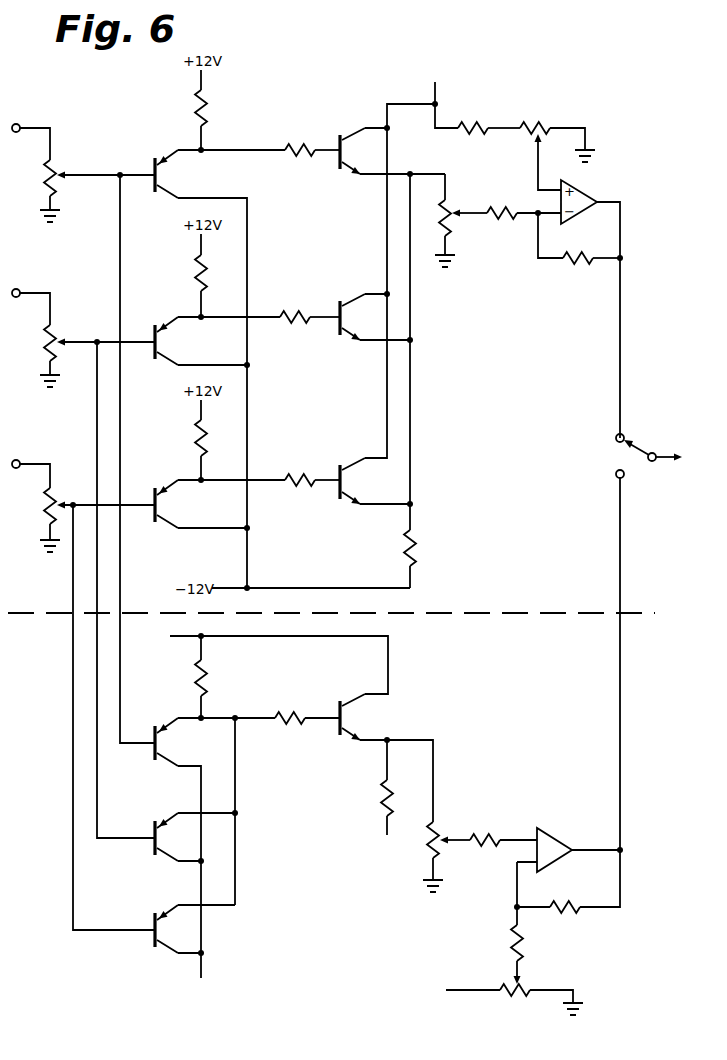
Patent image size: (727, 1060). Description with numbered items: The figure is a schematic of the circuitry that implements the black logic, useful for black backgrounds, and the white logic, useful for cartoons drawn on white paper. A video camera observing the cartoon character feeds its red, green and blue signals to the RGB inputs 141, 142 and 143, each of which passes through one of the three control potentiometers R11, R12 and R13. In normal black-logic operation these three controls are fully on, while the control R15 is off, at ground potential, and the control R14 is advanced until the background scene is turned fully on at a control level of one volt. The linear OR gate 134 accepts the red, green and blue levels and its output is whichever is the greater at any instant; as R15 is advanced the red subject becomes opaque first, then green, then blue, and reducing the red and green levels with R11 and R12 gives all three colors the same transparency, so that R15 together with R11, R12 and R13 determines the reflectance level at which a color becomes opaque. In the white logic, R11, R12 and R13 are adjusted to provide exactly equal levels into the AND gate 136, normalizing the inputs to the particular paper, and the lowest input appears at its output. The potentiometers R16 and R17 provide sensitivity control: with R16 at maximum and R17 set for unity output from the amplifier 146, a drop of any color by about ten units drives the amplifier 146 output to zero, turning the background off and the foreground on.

The RGB input 141 is at (19, 123).
The RGB input 142 is at (19, 290).
The RGB input 143 is at (19, 461).
The linear OR gate 134 is at (338, 257).
The AND gate 136 is at (315, 830).
The amplifier 146 is at (557, 832).
The control potentiometer R11 is at (97, 187).
The control potentiometer R12 is at (97, 353).
The control potentiometer R13 is at (97, 517).
The control R14 is at (557, 147).
The control R15 is at (461, 220).
The potentiometer R16 is at (463, 854).
The potentiometer R17 is at (501, 1002).